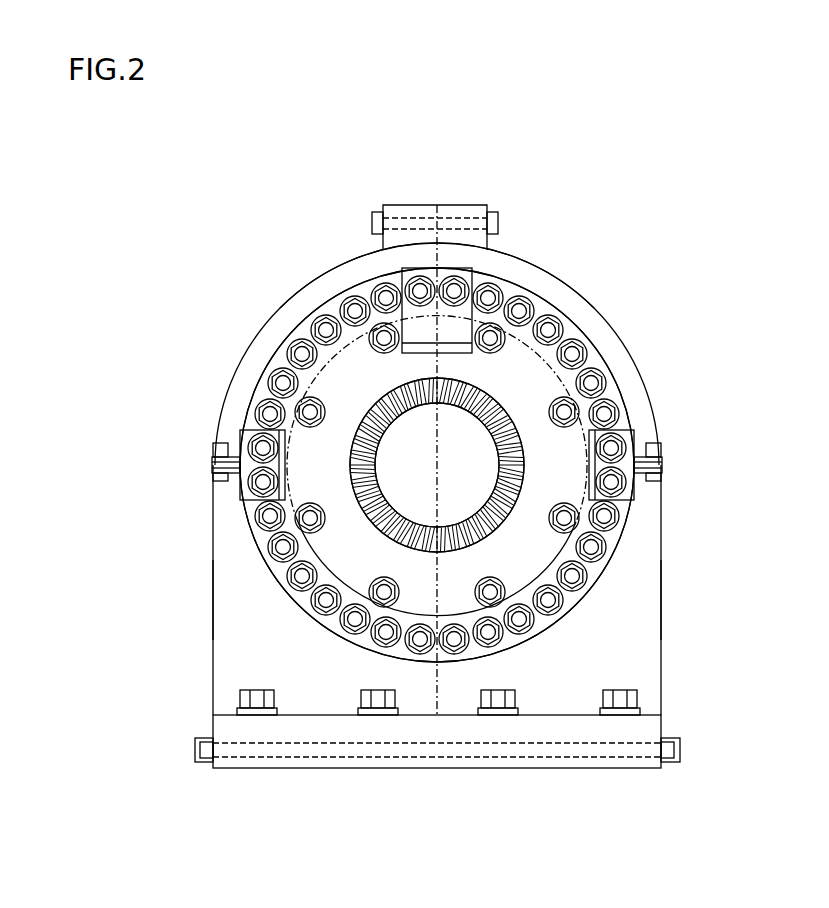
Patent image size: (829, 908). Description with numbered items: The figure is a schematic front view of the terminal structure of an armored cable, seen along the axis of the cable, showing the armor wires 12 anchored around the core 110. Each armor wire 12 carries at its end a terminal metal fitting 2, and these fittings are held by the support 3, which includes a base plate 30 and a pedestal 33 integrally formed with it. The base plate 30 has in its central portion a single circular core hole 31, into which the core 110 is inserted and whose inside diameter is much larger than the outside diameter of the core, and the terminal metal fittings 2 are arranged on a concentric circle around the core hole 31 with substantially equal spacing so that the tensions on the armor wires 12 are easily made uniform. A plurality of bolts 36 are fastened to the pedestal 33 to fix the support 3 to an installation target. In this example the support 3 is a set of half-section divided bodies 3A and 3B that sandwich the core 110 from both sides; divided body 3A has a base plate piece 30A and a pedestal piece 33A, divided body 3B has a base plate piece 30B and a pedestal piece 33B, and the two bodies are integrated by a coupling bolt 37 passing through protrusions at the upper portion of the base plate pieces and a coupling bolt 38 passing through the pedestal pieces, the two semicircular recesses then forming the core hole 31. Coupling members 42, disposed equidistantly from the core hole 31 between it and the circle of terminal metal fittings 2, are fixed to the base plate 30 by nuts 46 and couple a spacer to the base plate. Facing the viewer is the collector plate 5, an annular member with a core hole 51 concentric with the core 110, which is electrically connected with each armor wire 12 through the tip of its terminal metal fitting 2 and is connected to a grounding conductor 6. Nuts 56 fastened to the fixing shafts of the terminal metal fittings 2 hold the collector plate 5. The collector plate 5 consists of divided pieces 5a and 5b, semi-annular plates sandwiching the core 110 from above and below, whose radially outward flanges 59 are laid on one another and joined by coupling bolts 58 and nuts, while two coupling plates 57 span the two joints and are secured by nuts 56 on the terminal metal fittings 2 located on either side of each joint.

The terminal metal fitting 2 is at (327, 330).
The support 3 is at (205, 575).
The divided body 3A is at (668, 600).
The divided body 3B is at (213, 605).
The collector plate 5 is at (606, 329).
The divided piece 5a is at (570, 330).
The divided piece 5b is at (260, 628).
The grounding conductor 6 is at (455, 333).
The armor wire 12 is at (382, 395).
The base plate 30 is at (282, 290).
The base plate piece 30A is at (636, 500).
The base plate piece 30B is at (240, 410).
The core hole 31 is at (523, 447).
The pedestal 33 is at (655, 712).
The pedestal piece 33A is at (650, 733).
The pedestal piece 33B is at (227, 725).
The bolt 36 is at (370, 690).
The coupling bolt 37 is at (458, 208).
The coupling bolt 38 is at (560, 750).
The coupling member 42 is at (258, 436).
The nut 46 is at (473, 602).
The core hole 51 is at (545, 380).
The nut 56 is at (387, 288).
The coupling plate 57 is at (238, 470).
The coupling bolt 58 is at (213, 477).
The flange 59 is at (213, 450).
The core 110 is at (455, 445).